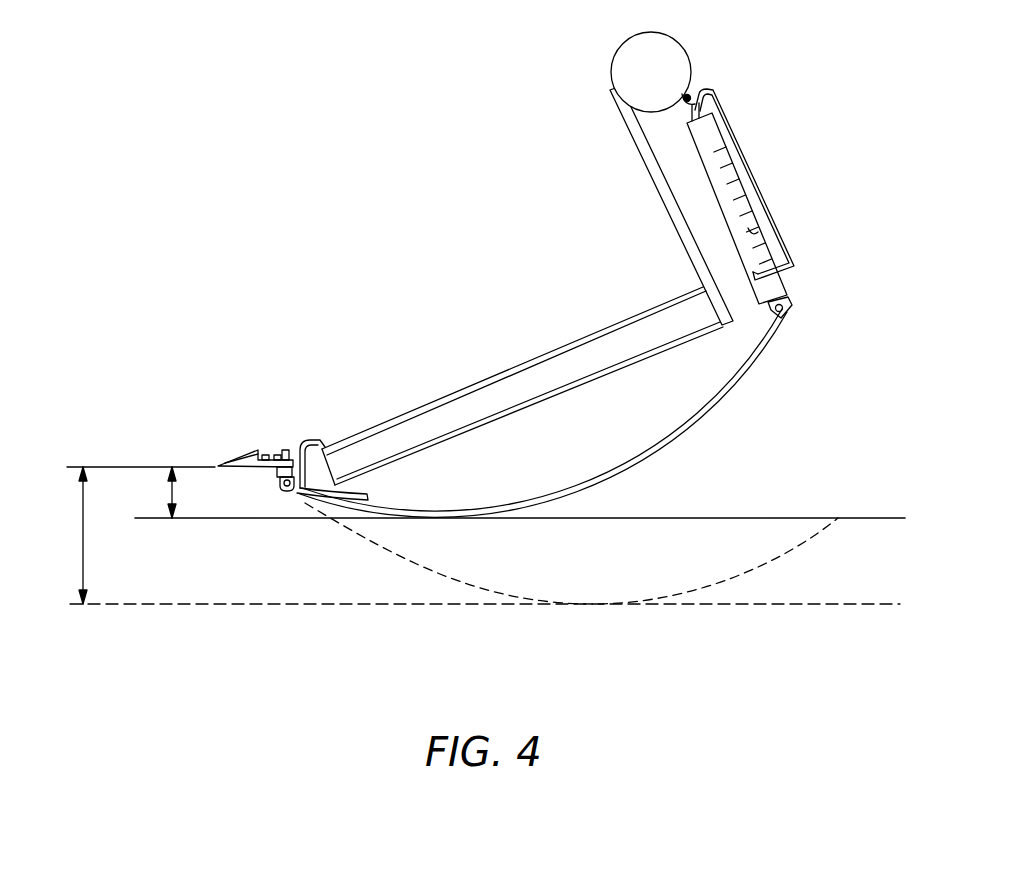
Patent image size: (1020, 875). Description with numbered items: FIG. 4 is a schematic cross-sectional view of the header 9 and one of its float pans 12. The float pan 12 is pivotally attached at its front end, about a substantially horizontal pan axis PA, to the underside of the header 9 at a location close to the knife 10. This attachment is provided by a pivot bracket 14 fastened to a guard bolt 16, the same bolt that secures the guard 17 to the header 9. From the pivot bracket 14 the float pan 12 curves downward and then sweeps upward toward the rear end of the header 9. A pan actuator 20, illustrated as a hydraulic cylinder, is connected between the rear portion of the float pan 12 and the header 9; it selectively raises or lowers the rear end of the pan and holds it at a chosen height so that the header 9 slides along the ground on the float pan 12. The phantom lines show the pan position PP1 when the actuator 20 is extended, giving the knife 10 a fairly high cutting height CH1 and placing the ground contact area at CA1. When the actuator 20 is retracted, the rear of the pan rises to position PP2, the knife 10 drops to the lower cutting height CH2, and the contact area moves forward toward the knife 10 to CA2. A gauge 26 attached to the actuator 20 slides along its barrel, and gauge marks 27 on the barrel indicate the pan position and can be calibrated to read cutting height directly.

The header 9 is at (611, 65).
The knife 10 is at (283, 448).
The float pan 12 is at (653, 457).
The pivot bracket 14 is at (276, 483).
The guard bolt 16 is at (300, 441).
The guard 17 is at (245, 449).
The pan actuator 20 is at (803, 280).
The gauge 26 is at (752, 172).
The gauge marks 27 is at (753, 237).
The cutting height CH1 is at (58, 535).
The cutting height CH2 is at (146, 492).
The pan axis PA is at (280, 497).
The contact area CA1 is at (582, 607).
The contact area CA2 is at (427, 522).
The float pan position PP1 is at (798, 550).
The float pan position PP2 is at (729, 402).